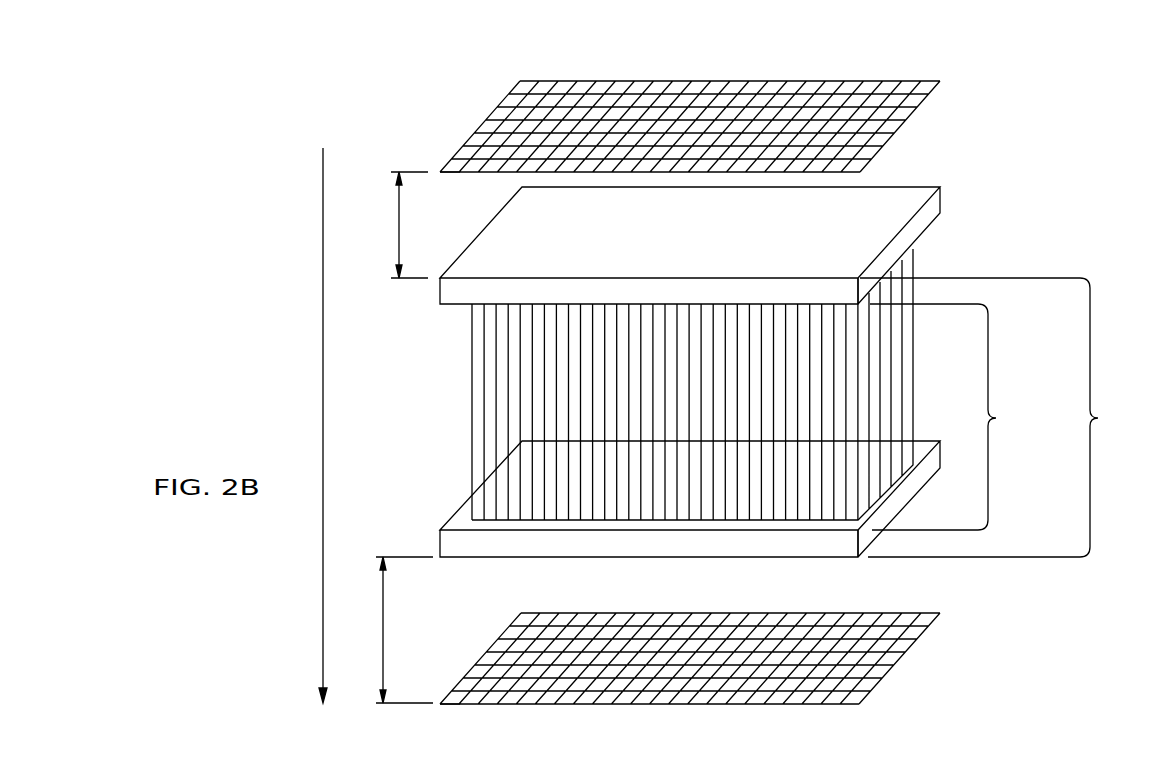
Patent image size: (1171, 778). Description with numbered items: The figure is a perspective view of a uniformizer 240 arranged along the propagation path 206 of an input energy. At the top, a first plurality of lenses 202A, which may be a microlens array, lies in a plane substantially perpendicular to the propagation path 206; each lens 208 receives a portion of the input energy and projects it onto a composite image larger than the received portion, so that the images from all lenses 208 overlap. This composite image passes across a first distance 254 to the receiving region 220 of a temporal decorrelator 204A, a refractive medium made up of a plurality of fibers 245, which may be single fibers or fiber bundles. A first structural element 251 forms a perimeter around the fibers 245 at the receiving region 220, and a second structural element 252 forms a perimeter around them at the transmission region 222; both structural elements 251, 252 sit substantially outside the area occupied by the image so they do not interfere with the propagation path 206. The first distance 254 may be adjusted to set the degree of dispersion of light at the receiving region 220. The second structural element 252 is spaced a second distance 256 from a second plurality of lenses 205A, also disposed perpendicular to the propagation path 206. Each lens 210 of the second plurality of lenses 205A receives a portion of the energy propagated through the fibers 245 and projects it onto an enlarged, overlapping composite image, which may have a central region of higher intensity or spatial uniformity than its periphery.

The first plurality of lenses 202A is at (877, 81).
The second plurality of lenses 205A is at (757, 704).
The lens 208 is at (446, 170).
The lens 210 is at (440, 704).
The receiving region 220 is at (828, 278).
The transmission region 222 is at (815, 557).
The uniformizer 240 is at (977, 268).
The fibers 245 is at (997, 418).
The first structural element 251 is at (862, 288).
The second structural element 252 is at (862, 547).
The temporal decorrelator 204A is at (1099, 418).
The propagation path 206 is at (323, 390).
The first distance 254 is at (399, 233).
The second distance 256 is at (383, 647).